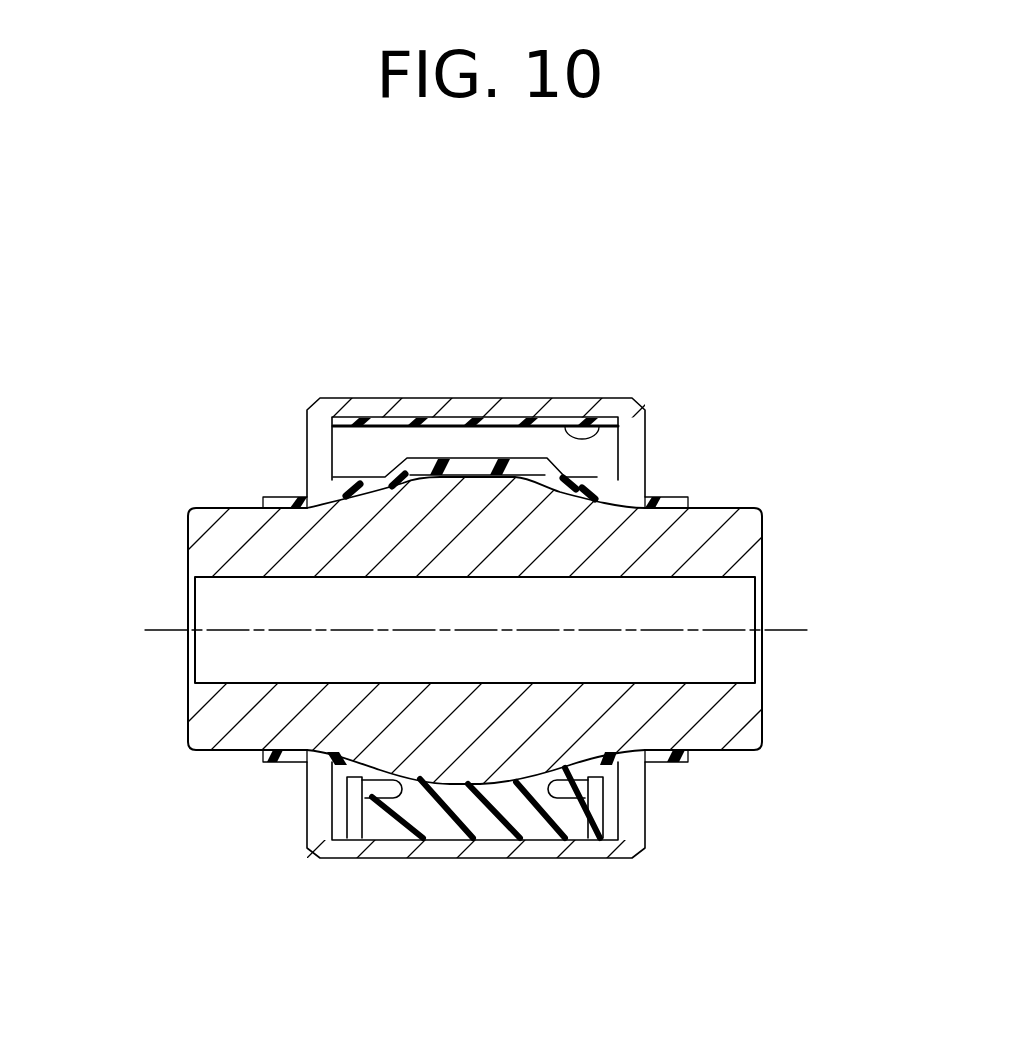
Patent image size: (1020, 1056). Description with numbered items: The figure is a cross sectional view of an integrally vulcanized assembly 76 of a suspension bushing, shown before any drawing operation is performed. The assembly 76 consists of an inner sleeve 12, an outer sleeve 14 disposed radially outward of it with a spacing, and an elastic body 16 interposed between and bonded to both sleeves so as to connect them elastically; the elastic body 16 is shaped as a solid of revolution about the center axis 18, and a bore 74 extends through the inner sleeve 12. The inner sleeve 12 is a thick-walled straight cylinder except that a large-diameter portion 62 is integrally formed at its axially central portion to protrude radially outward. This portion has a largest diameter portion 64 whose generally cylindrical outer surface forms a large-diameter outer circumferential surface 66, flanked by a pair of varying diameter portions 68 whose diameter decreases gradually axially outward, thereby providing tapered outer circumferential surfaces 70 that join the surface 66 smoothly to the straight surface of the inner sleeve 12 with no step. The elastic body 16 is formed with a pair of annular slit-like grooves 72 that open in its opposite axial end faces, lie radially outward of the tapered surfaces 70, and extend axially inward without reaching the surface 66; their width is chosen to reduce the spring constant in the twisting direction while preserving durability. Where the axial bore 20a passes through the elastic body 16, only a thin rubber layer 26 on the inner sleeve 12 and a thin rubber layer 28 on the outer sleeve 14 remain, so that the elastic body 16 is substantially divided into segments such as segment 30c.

The inner sleeve 12 is at (733, 537).
The outer sleeve 14 is at (360, 850).
The elastic body 16 is at (436, 852).
The center axis 18 is at (783, 630).
The axial bore 20a is at (604, 426).
The thin rubber layer 26 is at (280, 500).
The thin rubber layer 28 is at (390, 423).
The segment 30c is at (548, 827).
The large-diameter portion 62 is at (512, 803).
The largest diameter portion 64 is at (468, 503).
The large-diameter outer circumferential surface 66 is at (480, 474).
The varying diameter portion 68 is at (393, 508).
The tapered outer circumferential surface 70 is at (353, 764).
The slit-like groove 72 is at (363, 783).
The bore 74 is at (247, 577).
The integrally vulcanized assembly 76 is at (604, 343).